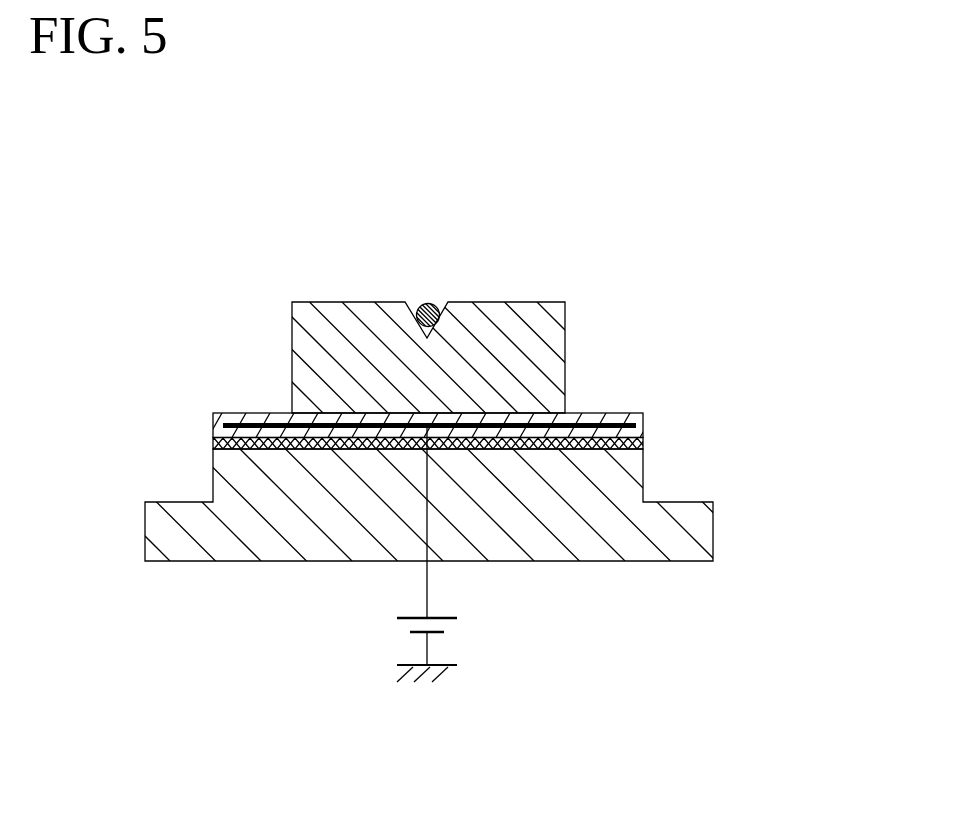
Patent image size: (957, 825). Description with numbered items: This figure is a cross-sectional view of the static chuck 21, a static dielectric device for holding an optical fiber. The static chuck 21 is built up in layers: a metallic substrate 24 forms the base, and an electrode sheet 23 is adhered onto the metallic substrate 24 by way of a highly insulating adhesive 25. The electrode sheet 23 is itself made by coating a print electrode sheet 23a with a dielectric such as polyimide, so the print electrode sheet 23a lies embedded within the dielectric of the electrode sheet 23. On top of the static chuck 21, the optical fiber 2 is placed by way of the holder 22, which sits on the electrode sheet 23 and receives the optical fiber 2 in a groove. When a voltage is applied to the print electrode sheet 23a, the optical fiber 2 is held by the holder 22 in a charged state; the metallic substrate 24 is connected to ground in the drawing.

The optical fiber 2 is at (422, 303).
The static chuck 21 is at (432, 481).
The holder 22 is at (556, 359).
The electrode sheet 23 is at (636, 406).
The print electrode sheet 23a is at (600, 427).
The metallic substrate 24 is at (693, 538).
The highly insulating adhesive 25 is at (620, 450).